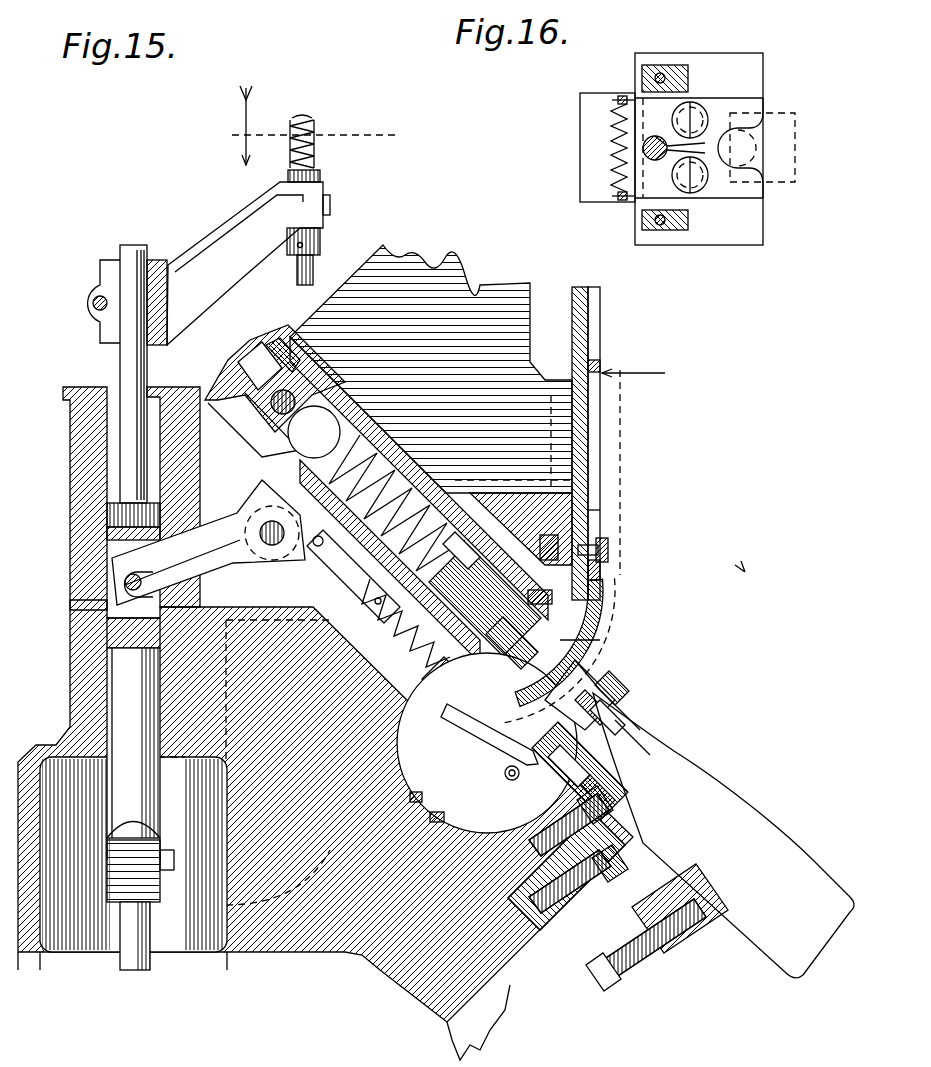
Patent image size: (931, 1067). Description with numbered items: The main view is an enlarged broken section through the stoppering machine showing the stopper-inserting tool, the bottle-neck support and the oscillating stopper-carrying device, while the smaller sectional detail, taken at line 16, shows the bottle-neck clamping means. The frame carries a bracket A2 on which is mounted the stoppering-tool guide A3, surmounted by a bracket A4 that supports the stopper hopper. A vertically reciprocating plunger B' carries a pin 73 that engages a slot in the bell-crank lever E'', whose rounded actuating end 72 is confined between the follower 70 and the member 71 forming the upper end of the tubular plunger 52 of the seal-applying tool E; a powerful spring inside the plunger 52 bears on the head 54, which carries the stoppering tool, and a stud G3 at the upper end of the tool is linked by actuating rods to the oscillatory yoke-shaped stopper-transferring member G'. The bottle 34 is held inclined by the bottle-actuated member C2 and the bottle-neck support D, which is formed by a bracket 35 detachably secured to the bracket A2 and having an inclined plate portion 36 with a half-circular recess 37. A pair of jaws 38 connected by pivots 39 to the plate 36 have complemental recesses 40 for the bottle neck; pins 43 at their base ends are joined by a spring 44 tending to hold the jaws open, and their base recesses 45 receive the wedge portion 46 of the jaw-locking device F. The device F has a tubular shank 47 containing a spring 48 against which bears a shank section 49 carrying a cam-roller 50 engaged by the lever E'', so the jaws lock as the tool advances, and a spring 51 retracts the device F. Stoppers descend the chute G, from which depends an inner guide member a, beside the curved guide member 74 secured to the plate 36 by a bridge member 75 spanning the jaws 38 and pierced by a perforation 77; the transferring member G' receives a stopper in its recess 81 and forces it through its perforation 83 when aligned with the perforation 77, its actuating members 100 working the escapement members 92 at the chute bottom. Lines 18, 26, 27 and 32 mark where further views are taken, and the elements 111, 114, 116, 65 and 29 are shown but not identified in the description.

In FIG. 15, the view line 32 is at (291, 125).
In FIG. 15, the spring 111 is at (312, 122).
In FIG. 15, the nut 116 is at (318, 154).
In FIG. 15, the arm 114 is at (230, 247).
In FIG. 15, the vertically reciprocating plunger B' is at (93, 569).
In FIG. 15, the member forming upper end of tubular member 71 is at (250, 382).
In FIG. 15, the bolt or stud G3 is at (284, 390).
In FIG. 15, the bracket A4 is at (462, 295).
In FIG. 15, the stopper-chute G is at (606, 436).
In FIG. 15, the view line 27 is at (633, 451).
In FIG. 15, the rounded actuating end of bell-crank lever 72 is at (300, 433).
In FIG. 15, the follower 70 is at (313, 440).
In FIG. 15, the spring 65 is at (335, 475).
In FIG. 15, the bell-crank lever E'' is at (182, 539).
In FIG. 15, the cam-roller 50 is at (208, 542).
In FIG. 15, the pin 73 is at (126, 582).
In FIG. 15, the shank section 49 is at (325, 568).
In FIG. 15, the tubular plunger 52 is at (521, 529).
In FIG. 15, the stoppering-tool guide A3 is at (540, 464).
In FIG. 15, the head 54 is at (565, 552).
In FIG. 15, the escapement members 92 is at (603, 515).
In FIG. 15, the actuating members 100 is at (745, 572).
In FIG. 15, the section line 16 is at (748, 546).
In FIG. 15, the seal-applying tool E is at (645, 567).
In FIG. 15, the oscillatory stopper-transferring member G' is at (638, 560).
In FIG. 15, the inner guide-member a is at (541, 603).
In FIG. 15, the recess 81 is at (600, 598).
In FIG. 15, the perforation 83 is at (640, 628).
In FIG. 15, the curved guide member 74 is at (600, 643).
In FIG. 15, the perforation 77 is at (590, 662).
In FIG. 15, the neck-clamp closing device F is at (557, 673).
In FIG. 15, the shank 47 is at (362, 662).
In FIG. 15, the complemental recesses 40 is at (660, 680).
In FIG. 16, the complemental recesses 40 is at (752, 132).
In FIG. 15, the recess 37 is at (618, 702).
In FIG. 15, the spring 48 is at (440, 700).
In FIG. 15, the spring 51 is at (455, 722).
In FIG. 15, the section line 26 is at (492, 752).
In FIG. 15, the bridge member 75 is at (640, 725).
In FIG. 16, the bridge member 75 is at (682, 66).
In FIG. 15, the beveled or wedge portion 46 is at (505, 776).
In FIG. 16, the beveled or wedge portion 46 is at (645, 158).
In FIG. 15, the section line 18 is at (586, 748).
In FIG. 15, the jaws 38 is at (655, 752).
In FIG. 16, the jaws 38 is at (748, 103).
In FIG. 15, the pins 43 is at (488, 798).
In FIG. 16, the pins 43 is at (628, 99).
In FIG. 15, the spring 44 is at (505, 790).
In FIG. 16, the spring 44 is at (643, 149).
In FIG. 15, the inclined plate-form portion 36 is at (612, 765).
In FIG. 15, the bottle-neck support D is at (640, 790).
In FIG. 16, the bottle-neck support D is at (643, 126).
In FIG. 15, the bottle 34 is at (768, 838).
In FIG. 15, the bracket 35 is at (618, 835).
In FIG. 15, the bracket A2 is at (325, 830).
In FIG. 15, the bottle-actuated member C2 is at (680, 950).
In FIG. 15, the bolt 29 is at (608, 995).
In FIG. 16, the pivots 39 is at (700, 108).
In FIG. 16, the complemental recesses 45 is at (640, 130).